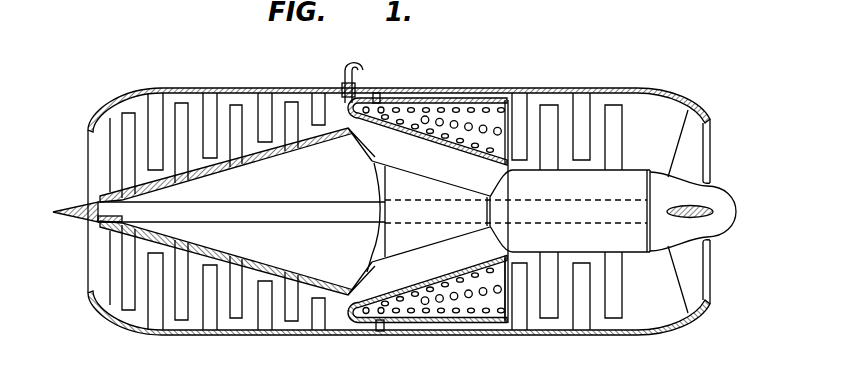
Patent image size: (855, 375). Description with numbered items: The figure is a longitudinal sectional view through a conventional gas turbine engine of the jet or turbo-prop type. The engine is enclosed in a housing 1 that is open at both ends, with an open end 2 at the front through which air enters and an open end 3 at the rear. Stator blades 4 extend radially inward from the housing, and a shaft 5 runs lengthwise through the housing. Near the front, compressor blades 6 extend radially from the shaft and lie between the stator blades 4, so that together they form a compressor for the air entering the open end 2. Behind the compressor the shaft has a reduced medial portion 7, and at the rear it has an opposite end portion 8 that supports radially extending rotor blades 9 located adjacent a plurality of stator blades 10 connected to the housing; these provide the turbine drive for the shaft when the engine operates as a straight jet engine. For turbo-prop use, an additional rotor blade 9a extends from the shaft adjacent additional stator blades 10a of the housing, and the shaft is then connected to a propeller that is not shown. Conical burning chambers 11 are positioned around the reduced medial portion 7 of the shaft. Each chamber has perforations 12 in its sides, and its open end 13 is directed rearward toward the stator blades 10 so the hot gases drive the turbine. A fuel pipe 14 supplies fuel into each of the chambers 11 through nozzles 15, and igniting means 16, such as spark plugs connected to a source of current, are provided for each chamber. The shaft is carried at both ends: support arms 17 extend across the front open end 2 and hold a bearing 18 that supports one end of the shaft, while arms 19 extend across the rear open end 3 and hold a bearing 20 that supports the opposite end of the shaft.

The housing 1 is at (194, 337).
The open end 2 is at (88, 290).
The open end 3 is at (711, 301).
The stator blades 4 is at (208, 100).
The shaft 5 is at (287, 111).
The compressor blades 6 is at (293, 316).
The reduced medial portion 7 is at (433, 193).
The end portion 8 is at (622, 186).
The fin 9 is at (550, 107).
The additional rotor blade 9a is at (612, 139).
The stator blades 10 is at (519, 103).
The additional stator blades 10a is at (586, 113).
The conical burning chambers 11 is at (451, 100).
The perforations 12 is at (414, 107).
The open ends 13 is at (503, 100).
The fuel pipe 14 is at (360, 71).
The nozzles 15 is at (434, 180).
The igniting means 16 is at (379, 97).
The support arms 17 is at (96, 157).
The bearing 18 is at (103, 198).
The arms 19 is at (692, 160).
The bearing 20 is at (688, 197).